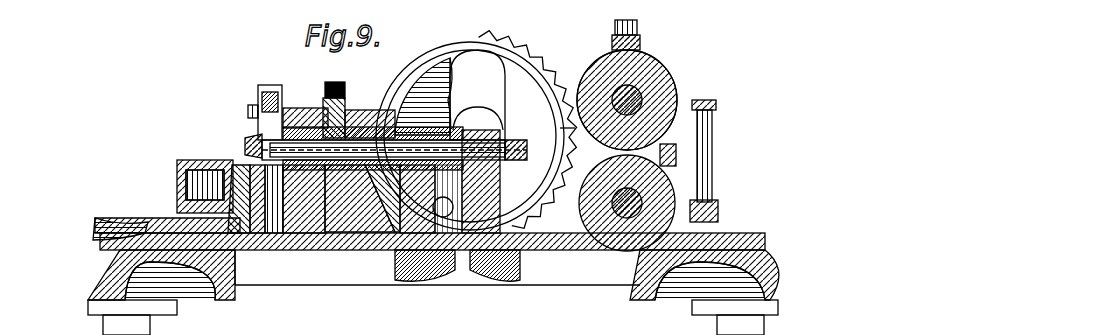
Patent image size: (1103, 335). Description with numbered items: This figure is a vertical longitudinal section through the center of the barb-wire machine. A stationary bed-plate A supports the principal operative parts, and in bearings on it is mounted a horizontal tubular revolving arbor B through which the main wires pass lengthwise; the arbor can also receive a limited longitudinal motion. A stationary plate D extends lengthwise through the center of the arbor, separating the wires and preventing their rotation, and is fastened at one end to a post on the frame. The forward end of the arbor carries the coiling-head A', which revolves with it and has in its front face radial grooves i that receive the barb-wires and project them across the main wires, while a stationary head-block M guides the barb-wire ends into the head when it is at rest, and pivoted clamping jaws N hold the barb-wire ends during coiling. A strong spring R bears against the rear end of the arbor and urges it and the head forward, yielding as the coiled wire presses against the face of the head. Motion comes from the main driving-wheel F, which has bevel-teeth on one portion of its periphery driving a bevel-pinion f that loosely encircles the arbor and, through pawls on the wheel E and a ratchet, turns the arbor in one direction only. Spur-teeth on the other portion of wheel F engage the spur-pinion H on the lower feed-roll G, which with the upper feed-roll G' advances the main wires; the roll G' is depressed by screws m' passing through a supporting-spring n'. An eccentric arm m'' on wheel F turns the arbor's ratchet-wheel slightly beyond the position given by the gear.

The bed-plate A is at (433, 276).
The coiling-head A' is at (275, 164).
The tubular revolving arbor B is at (402, 100).
The stationary plate D is at (527, 150).
The wheel E is at (359, 103).
The main driving-wheel F is at (540, 76).
The lower feed-roll G is at (660, 175).
The upper main feed-roll G' is at (634, 100).
The spur-pinion H is at (567, 123).
The stationary head-block M is at (310, 108).
The clamping jaws N is at (245, 146).
The post P is at (265, 105).
The spring R is at (492, 44).
The boss opening b is at (205, 190).
The bevel-pinion f is at (405, 135).
The radial grooves i is at (262, 142).
The screws m' is at (636, 20).
The eccentric arm m'' is at (423, 85).
The supporting-spring n' is at (637, 38).